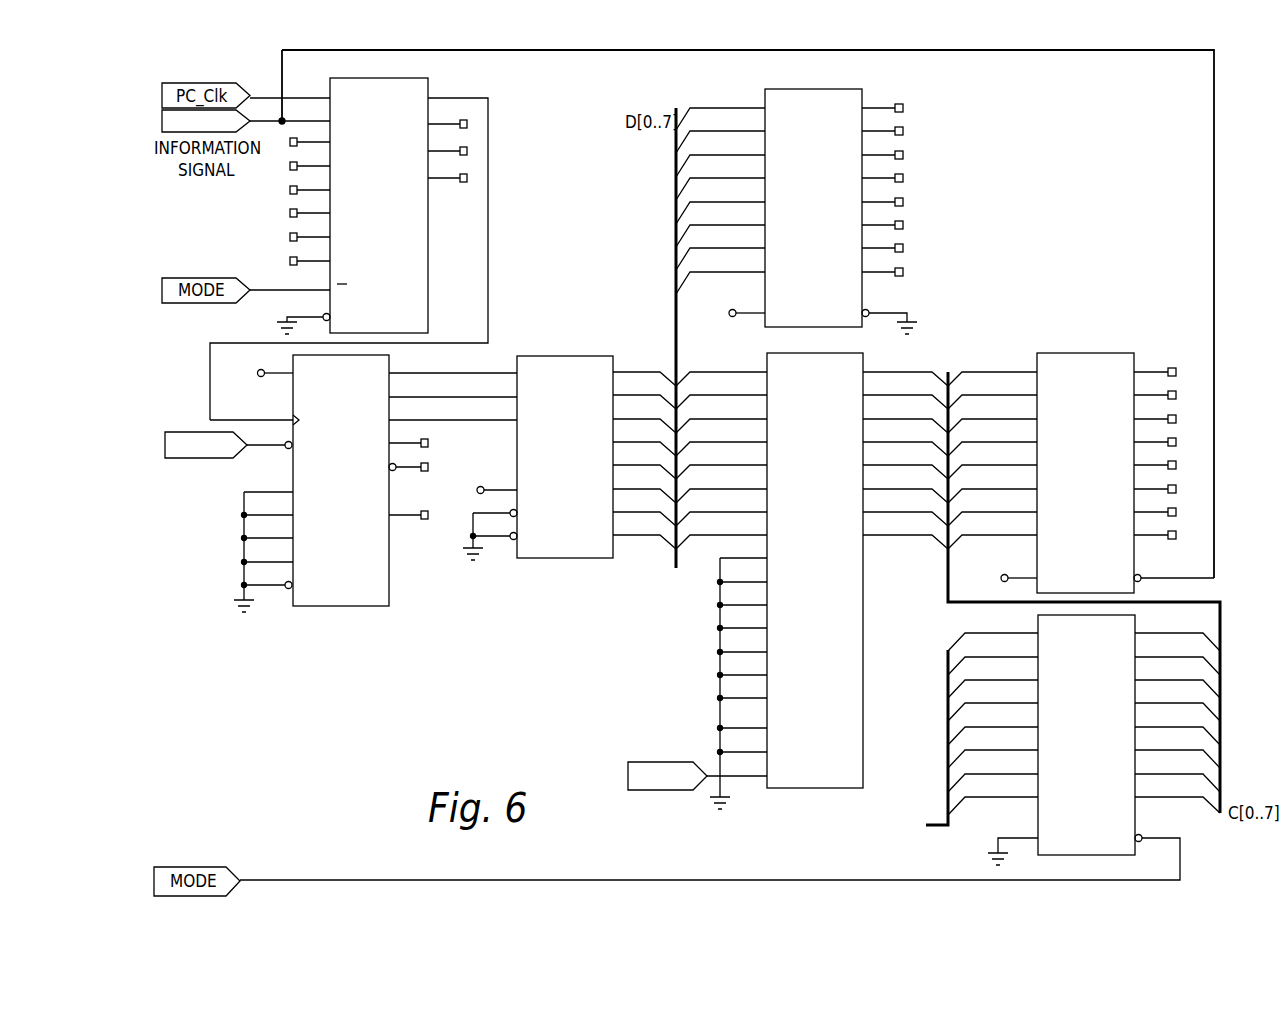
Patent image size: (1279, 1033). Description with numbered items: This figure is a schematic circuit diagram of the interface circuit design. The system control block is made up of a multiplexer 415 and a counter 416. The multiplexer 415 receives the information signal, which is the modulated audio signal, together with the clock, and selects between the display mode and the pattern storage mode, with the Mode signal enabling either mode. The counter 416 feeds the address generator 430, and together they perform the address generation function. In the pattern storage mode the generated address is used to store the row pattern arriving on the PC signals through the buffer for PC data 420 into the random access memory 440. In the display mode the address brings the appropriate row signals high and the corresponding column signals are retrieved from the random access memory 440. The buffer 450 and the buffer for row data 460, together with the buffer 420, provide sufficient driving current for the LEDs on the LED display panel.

The multiplexer 415 is at (418, 262).
The counter 416 is at (352, 597).
The buffer for PC data 420 is at (1100, 847).
The address generator 430 is at (568, 363).
The random access memory (RAM) 440 is at (860, 672).
The buffer 450 is at (827, 90).
The buffer for row data 460 is at (1078, 358).